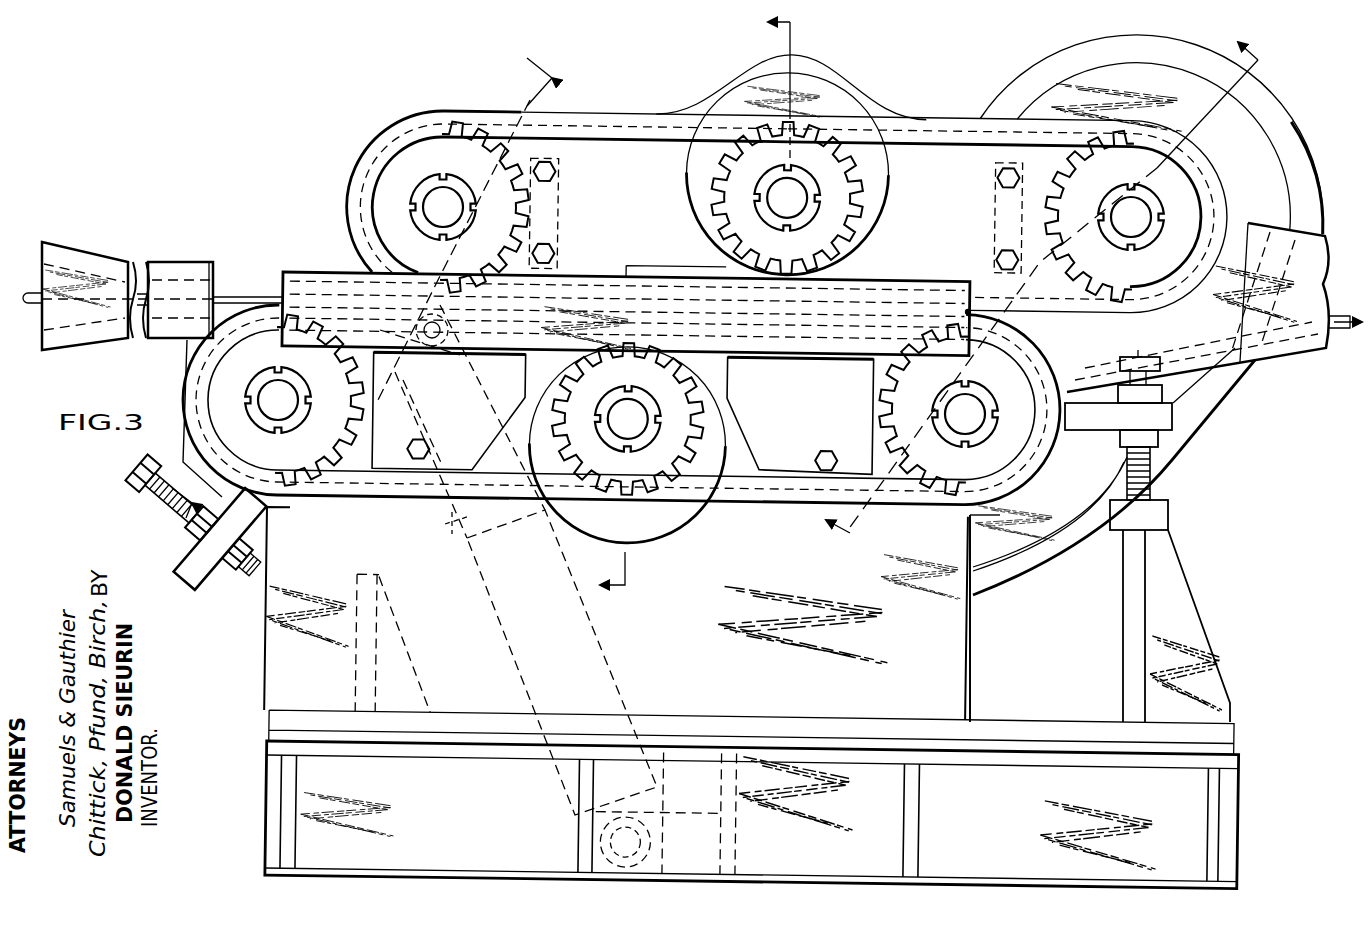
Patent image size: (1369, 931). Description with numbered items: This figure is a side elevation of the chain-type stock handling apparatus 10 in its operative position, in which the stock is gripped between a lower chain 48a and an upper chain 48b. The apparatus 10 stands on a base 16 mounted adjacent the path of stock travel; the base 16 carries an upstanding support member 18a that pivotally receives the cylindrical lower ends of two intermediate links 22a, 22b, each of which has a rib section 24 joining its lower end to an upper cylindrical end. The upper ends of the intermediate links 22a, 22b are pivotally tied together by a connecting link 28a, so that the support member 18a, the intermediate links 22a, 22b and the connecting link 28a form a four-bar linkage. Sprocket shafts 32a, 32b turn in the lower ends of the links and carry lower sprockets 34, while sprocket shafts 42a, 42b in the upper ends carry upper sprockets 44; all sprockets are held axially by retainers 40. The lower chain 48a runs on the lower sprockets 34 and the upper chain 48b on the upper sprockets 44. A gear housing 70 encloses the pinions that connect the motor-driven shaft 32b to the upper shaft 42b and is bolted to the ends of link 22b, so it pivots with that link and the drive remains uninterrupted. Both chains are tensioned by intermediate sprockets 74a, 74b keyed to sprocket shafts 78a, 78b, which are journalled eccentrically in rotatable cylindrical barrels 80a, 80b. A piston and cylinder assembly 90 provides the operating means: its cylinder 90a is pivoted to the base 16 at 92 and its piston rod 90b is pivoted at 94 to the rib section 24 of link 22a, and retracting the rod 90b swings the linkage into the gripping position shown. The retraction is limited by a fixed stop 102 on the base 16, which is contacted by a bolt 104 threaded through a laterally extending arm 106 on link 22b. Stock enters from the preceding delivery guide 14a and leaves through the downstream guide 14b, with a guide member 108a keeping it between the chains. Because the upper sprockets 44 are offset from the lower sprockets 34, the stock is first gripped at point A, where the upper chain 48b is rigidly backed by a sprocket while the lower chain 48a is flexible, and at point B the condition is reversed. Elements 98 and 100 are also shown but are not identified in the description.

The apparatus 10 is at (692, 448).
The delivery guide 14a is at (186, 272).
The downstream guide 14b is at (1284, 340).
The base 16 is at (1222, 794).
The support member 18a is at (955, 660).
The intermediate link 22a is at (355, 262).
The intermediate link 22b is at (1108, 314).
The rib section 24 is at (318, 268).
The connecting link 28a is at (872, 98).
The sprocket shaft 32a is at (270, 392).
The sprocket shaft 32b is at (962, 420).
The lower sprockets 34 is at (323, 473).
The retainers 40 is at (428, 230).
The sprocket shaft 42a is at (437, 198).
The sprocket shaft 42b is at (1147, 225).
The upper sprockets 44 is at (395, 166).
The chain 48a is at (760, 506).
The chain 48b is at (956, 117).
The gear housing 70 is at (1214, 378).
The intermediate sprocket 74a is at (690, 410).
The intermediate sprocket 74b is at (735, 192).
The sprocket shaft 78a is at (632, 430).
The sprocket shaft 78b is at (802, 190).
The cylindrical barrel 80a is at (598, 520).
The cylindrical barrel 80b is at (756, 95).
The piston and cylinder assembly 90 is at (622, 672).
The cylinder 90a is at (560, 770).
The piston rod 90b is at (460, 524).
The pivotal connection 92 is at (657, 838).
The pivotal connection 94 is at (449, 411).
The adjusting crank 98 is at (238, 532).
The slot 100 is at (400, 642).
The fixed stop 102 is at (1182, 606).
The bolt 104 is at (1152, 484).
The laterally extending arm 106 is at (1099, 420).
The guide member 108a is at (300, 290).
The point A is at (446, 326).
The point B is at (966, 310).